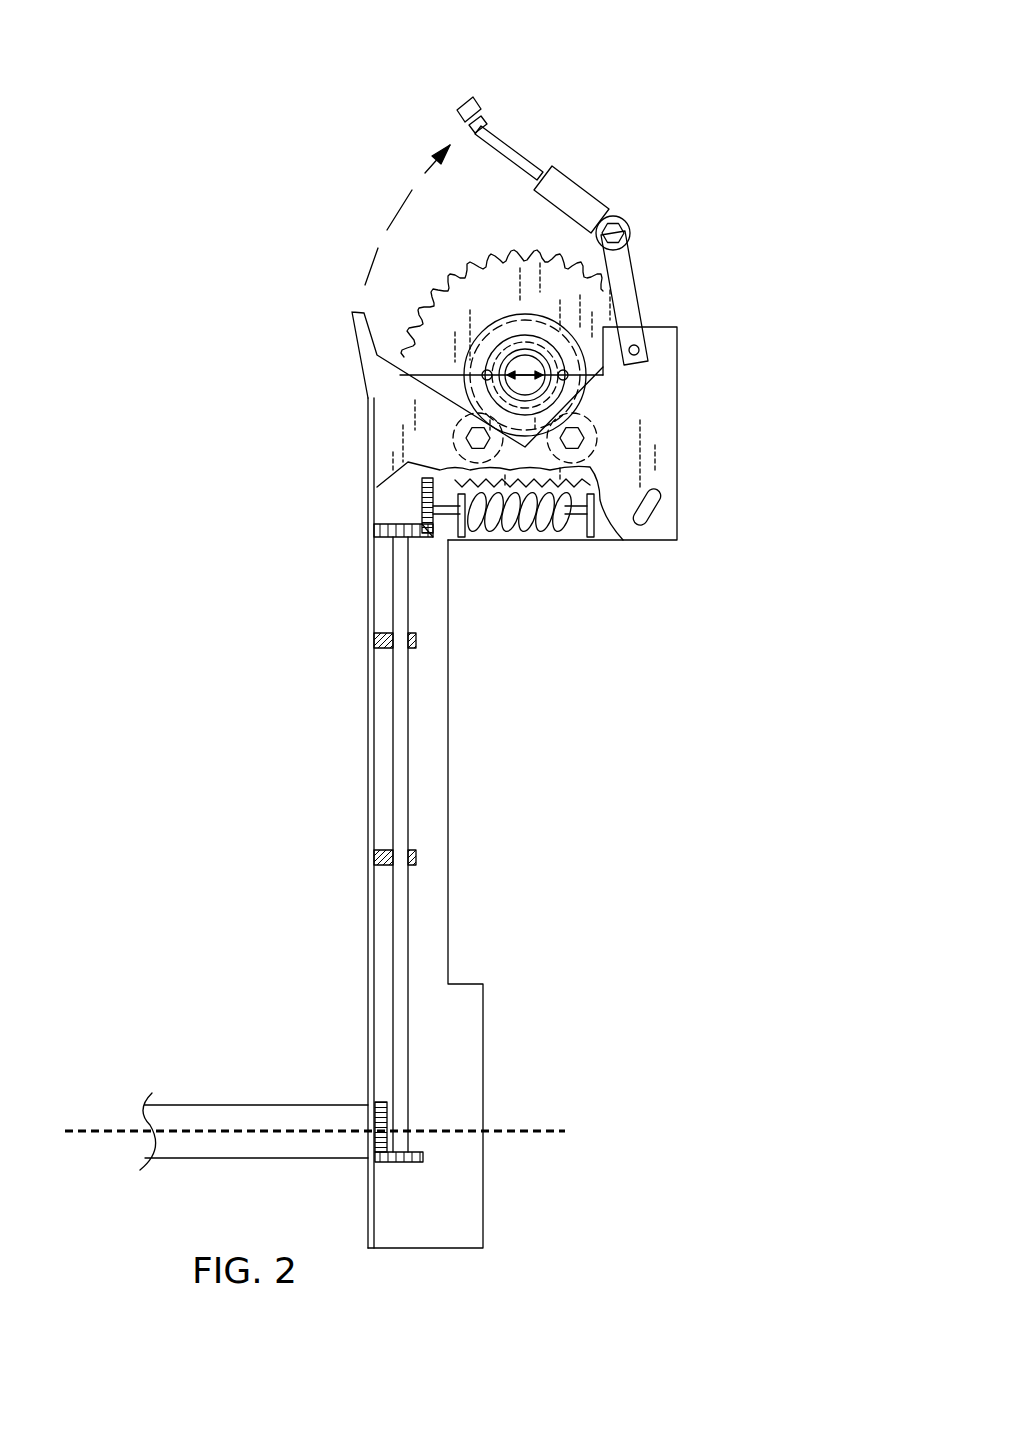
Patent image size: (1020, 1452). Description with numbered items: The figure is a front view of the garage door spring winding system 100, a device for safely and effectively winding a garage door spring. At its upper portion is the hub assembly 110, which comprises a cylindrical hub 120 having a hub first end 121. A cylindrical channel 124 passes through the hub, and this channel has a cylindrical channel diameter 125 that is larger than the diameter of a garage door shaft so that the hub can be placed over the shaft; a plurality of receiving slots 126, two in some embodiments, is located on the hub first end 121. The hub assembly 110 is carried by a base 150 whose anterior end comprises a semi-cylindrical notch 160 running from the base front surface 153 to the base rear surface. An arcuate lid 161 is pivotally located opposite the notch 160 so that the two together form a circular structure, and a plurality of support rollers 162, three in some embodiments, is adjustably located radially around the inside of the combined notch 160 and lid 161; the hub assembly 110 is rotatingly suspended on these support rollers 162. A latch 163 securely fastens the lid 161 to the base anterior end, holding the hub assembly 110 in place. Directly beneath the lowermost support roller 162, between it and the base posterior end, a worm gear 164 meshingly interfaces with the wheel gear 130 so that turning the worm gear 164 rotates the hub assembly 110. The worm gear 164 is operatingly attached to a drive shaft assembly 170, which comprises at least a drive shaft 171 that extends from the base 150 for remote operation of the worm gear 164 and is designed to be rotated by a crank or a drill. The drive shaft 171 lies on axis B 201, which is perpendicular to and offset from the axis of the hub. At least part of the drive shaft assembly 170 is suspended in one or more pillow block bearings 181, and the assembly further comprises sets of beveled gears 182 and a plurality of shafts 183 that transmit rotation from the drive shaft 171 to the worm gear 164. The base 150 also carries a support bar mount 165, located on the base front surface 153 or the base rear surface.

The garage door spring winding system 100 is at (641, 117).
The hub assembly 110 is at (390, 286).
The hub 120 is at (441, 343).
The hub first end 121 is at (553, 356).
The cylindrical channel 124 is at (537, 383).
The cylindrical channel diameter 125 is at (533, 367).
The receiving slots 126 is at (517, 352).
The wheel gear 130 is at (450, 275).
The base 150 is at (448, 760).
The base front surface 153 is at (660, 465).
The semi-cylindrical notch 160 is at (448, 384).
The arcuate lid 161 is at (626, 262).
The support rollers 162 is at (623, 215).
The latch 163 is at (478, 112).
The worm gear 164 is at (550, 528).
The support bar mount 165 is at (660, 512).
The drive shaft assembly 170 is at (238, 990).
The drive shaft 171 is at (253, 1105).
The pillow block bearings 181 is at (372, 858).
The beveled gears 182 is at (422, 500).
The shafts 183 is at (398, 550).
The axis B 201 is at (95, 1140).